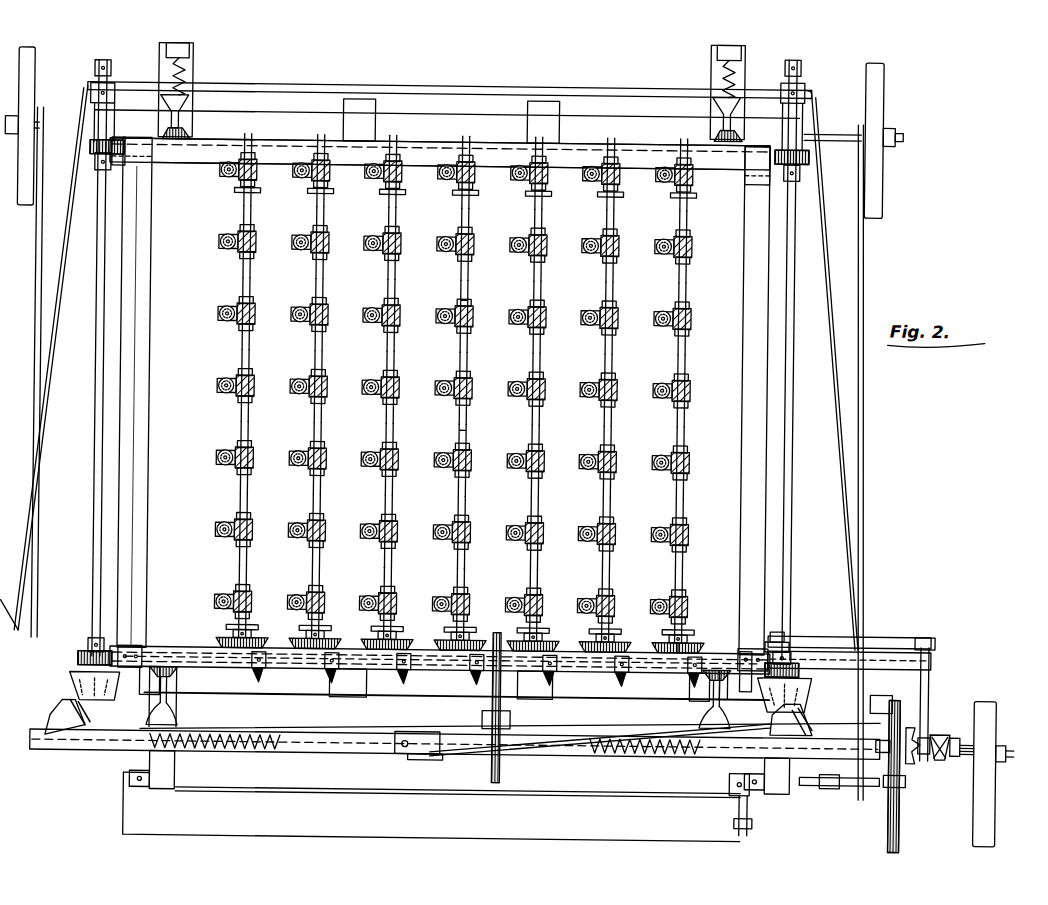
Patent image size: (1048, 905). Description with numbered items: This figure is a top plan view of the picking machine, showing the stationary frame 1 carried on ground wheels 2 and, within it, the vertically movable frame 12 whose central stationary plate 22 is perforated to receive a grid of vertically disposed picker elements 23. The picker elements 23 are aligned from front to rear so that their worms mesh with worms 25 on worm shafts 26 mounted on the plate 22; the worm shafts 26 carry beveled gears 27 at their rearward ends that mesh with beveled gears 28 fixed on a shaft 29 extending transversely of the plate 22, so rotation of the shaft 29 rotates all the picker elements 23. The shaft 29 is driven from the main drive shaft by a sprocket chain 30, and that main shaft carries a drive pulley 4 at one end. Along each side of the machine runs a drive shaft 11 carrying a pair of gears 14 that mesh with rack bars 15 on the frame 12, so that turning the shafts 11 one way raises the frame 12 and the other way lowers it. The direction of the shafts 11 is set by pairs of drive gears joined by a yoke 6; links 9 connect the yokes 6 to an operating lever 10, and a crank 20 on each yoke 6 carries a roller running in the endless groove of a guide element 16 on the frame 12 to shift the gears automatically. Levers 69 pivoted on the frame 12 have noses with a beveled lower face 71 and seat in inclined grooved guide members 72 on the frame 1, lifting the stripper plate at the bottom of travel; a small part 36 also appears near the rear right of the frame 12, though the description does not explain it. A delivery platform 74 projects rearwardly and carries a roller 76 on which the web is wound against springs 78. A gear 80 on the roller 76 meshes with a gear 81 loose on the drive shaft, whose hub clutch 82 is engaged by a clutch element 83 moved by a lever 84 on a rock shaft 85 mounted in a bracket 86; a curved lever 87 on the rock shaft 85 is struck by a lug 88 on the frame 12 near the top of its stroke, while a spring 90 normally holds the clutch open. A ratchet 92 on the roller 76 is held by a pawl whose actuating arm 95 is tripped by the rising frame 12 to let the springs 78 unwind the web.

The stationary frame 1 is at (614, 128).
The ground wheels 2 is at (882, 86).
The drive pulley 4 is at (1002, 779).
The yoke 6 is at (92, 778).
The links 9 is at (391, 726).
The operating lever 10 is at (409, 760).
The drive shaft 11 is at (93, 467).
The vertically movable frame 12 is at (138, 346).
The gears 14 is at (87, 152).
The rack bars 15 is at (127, 162).
The guide elements 16 is at (91, 682).
The crank 20 is at (75, 716).
The stationary plate 22 is at (440, 405).
The picker elements 23 is at (450, 515).
The worms 25 is at (476, 318).
The worm shafts 26 is at (470, 427).
The beveled gears 27 is at (690, 638).
The beveled gears 28 is at (262, 675).
The shaft 29 is at (207, 655).
The sprocket chain 30 is at (495, 690).
The post 36 is at (748, 651).
The levers 69 is at (181, 133).
The beveled lower face 71 is at (600, 770).
The grooved guide member 72 is at (172, 100).
The delivery platform 74 is at (135, 810).
The roller 76 is at (866, 783).
The springs 78 is at (177, 65).
The gear 80 is at (904, 832).
The gear 81 is at (899, 705).
The hub clutch 82 is at (914, 724).
The clutch element 83 is at (949, 756).
The lever 84 is at (942, 727).
The rock shaft 85 is at (934, 674).
The bracket 86 is at (899, 646).
The lever 87 is at (886, 630).
The lug 88 is at (787, 632).
The spring 90 is at (909, 784).
The ratchet 92 is at (742, 792).
The actuating arm 95 is at (727, 667).